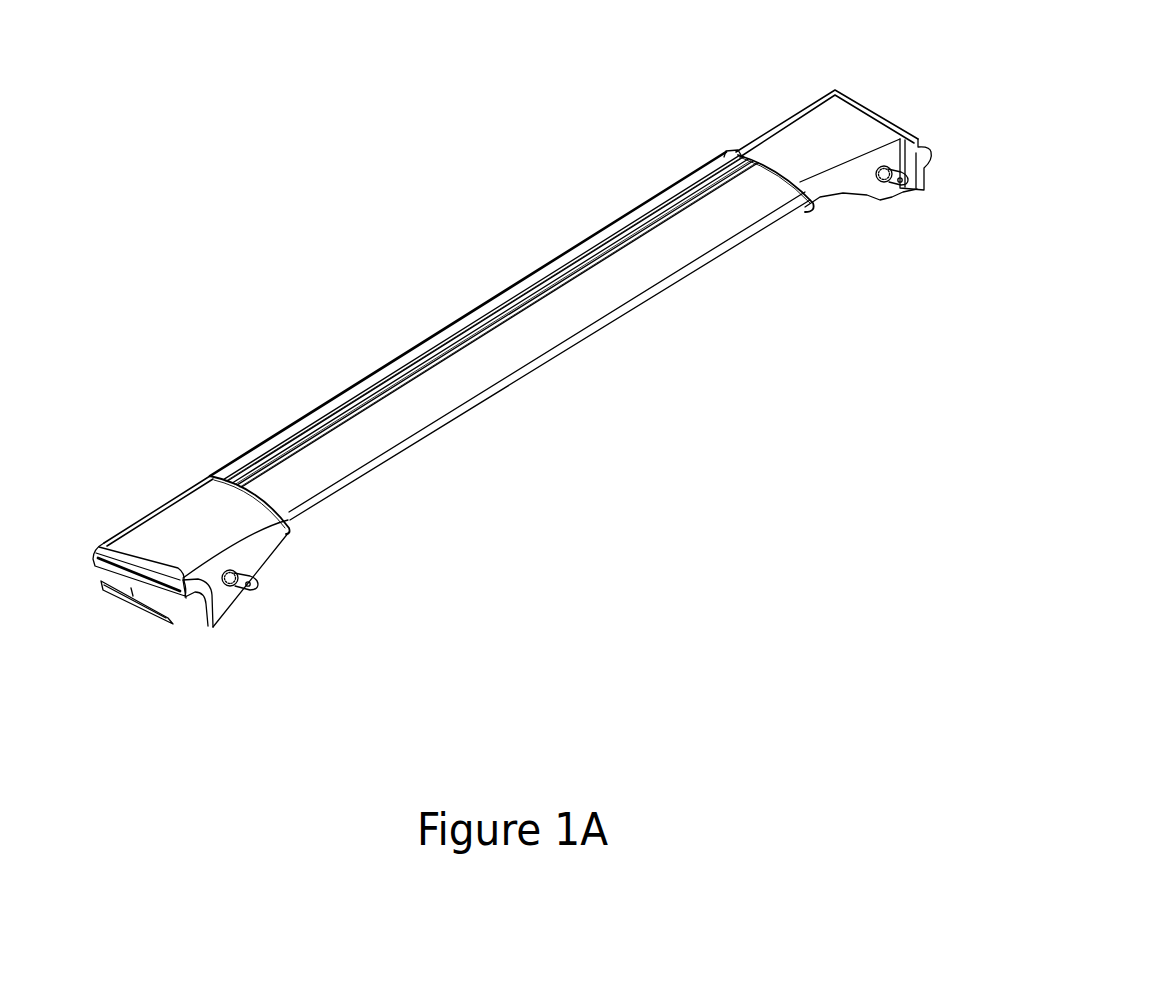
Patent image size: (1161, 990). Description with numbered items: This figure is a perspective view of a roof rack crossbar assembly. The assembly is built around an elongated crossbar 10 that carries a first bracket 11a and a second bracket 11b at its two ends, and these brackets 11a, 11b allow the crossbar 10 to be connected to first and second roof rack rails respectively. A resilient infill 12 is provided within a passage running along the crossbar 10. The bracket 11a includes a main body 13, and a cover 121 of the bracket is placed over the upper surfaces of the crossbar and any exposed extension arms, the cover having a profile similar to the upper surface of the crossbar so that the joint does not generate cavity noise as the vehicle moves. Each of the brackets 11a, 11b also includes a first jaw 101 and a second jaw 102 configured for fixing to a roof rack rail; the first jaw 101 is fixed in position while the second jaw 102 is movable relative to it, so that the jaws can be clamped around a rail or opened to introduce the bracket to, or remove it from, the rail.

The crossbar 10 is at (510, 336).
The resilient infill 12 is at (313, 440).
The main body 13 is at (272, 532).
The cover 121 is at (182, 525).
The first bracket 11a is at (261, 539).
The second bracket 11b is at (855, 204).
The first jaw 101 is at (187, 614).
The second jaw 102 is at (150, 620).